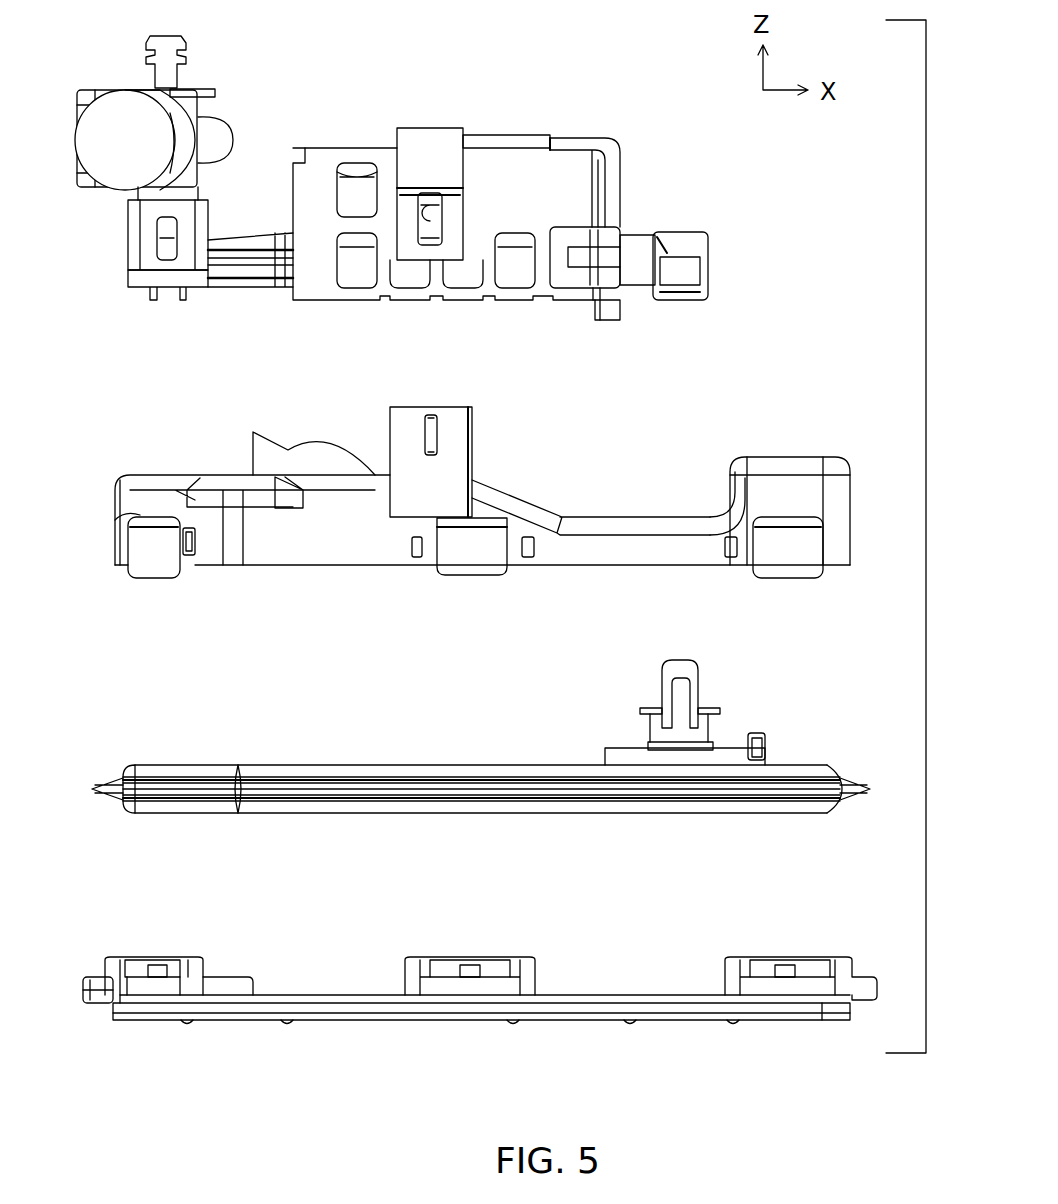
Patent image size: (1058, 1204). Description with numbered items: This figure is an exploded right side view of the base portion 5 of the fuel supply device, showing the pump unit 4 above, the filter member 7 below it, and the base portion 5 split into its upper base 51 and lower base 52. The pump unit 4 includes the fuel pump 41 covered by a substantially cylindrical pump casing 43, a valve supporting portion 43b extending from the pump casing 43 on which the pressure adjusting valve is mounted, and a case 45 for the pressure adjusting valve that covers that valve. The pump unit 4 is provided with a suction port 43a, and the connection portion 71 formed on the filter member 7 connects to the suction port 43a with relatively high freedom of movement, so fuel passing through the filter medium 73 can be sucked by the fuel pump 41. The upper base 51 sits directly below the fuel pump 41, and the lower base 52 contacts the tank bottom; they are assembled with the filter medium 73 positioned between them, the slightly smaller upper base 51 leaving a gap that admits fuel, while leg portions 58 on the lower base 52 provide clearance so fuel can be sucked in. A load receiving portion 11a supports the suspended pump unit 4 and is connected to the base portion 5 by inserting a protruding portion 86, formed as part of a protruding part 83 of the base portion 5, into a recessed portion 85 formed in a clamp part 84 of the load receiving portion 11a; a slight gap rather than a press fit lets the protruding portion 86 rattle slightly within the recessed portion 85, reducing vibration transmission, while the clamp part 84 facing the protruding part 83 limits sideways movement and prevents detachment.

The pump unit 4 is at (637, 106).
The base portion 5 is at (130, 434).
The filter member 7 is at (827, 727).
The load receiving portion 11a is at (428, 160).
The fuel pump 41 is at (355, 192).
The pump casing 43 is at (317, 207).
The suction port 43a is at (637, 250).
The valve supporting portion 43b is at (223, 270).
The case for the pressure adjusting valve 45 is at (118, 103).
The upper base 51 is at (803, 441).
The lower base 52 is at (797, 940).
The leg portions 58 is at (188, 1026).
The connection portion 71 is at (660, 738).
The filter medium 73 is at (193, 770).
The protruding part 83 is at (453, 500).
The clamp part 84 is at (452, 225).
The recessed portion 85 is at (445, 203).
The protruding portion 86 is at (432, 440).